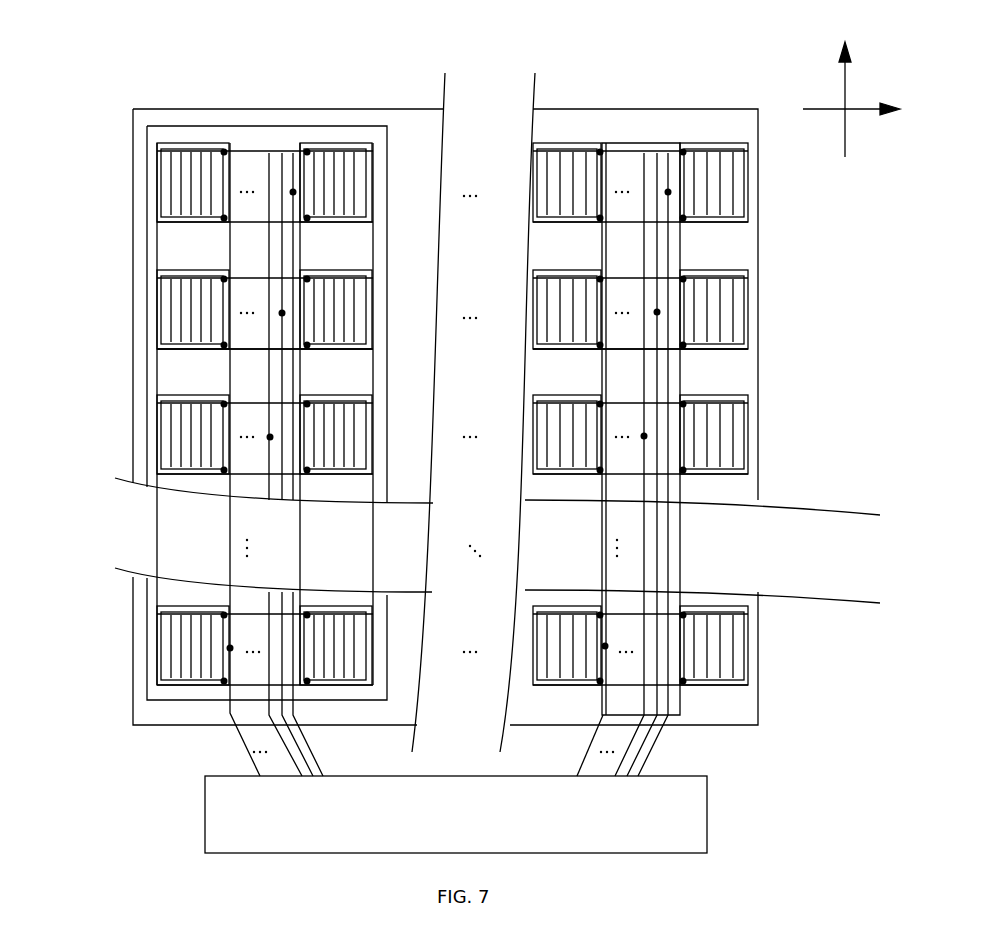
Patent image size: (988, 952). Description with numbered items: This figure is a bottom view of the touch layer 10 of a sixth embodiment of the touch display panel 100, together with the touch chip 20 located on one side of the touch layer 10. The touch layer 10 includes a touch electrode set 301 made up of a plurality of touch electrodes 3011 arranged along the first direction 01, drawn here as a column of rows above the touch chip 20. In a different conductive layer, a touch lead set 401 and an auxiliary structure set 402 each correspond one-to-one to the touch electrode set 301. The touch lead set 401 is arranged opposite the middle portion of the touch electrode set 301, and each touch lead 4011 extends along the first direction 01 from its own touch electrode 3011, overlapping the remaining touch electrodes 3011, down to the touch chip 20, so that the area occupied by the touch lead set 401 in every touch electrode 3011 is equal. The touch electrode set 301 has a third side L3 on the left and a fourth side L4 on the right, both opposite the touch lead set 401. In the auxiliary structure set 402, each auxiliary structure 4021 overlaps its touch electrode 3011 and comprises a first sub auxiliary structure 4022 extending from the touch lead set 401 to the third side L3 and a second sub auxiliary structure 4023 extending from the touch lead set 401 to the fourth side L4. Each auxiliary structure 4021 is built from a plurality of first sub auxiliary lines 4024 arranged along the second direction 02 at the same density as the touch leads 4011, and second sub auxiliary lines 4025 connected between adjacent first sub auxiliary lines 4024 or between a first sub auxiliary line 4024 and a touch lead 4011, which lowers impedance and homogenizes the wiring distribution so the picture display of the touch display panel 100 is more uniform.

The touch display panel 100 is at (188, 85).
The touch layer 10 is at (758, 109).
The touch chip 20 is at (707, 817).
The touch electrode set 301 is at (388, 128).
The touch electrode 3011 is at (582, 140).
The touch lead set 401 is at (630, 143).
The touch lead 4011 is at (670, 240).
The auxiliary structure set 402 is at (178, 685).
The auxiliary structure 4021 is at (455, 386).
The first sub auxiliary structure 4022 is at (188, 157).
The second sub auxiliary structure 4023 is at (340, 170).
The first sub auxiliary line 4024 is at (168, 666).
The second sub auxiliary line 4025 is at (160, 615).
The third side L3 is at (157, 348).
The fourth side L4 is at (747, 342).
The first direction 01 is at (846, 83).
The second direction 02 is at (867, 110).